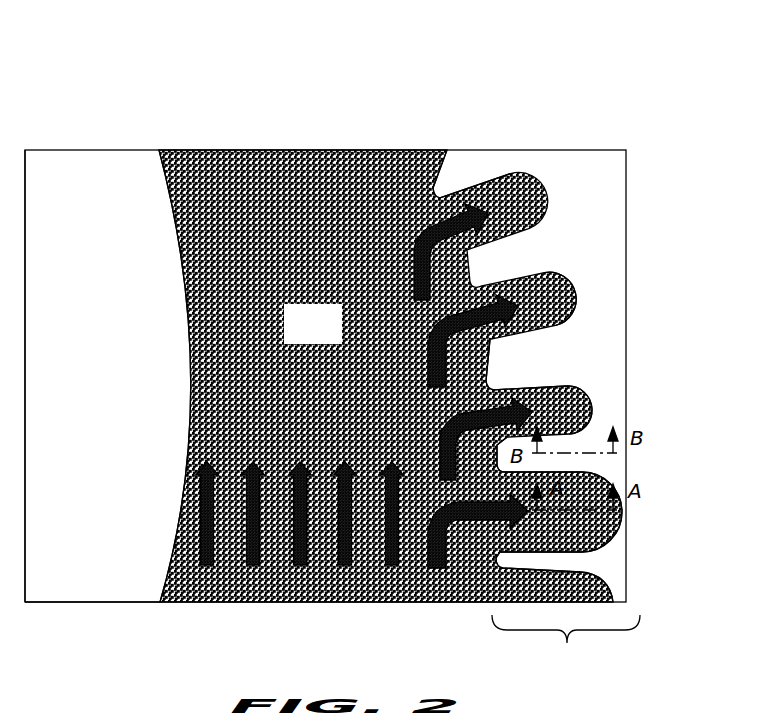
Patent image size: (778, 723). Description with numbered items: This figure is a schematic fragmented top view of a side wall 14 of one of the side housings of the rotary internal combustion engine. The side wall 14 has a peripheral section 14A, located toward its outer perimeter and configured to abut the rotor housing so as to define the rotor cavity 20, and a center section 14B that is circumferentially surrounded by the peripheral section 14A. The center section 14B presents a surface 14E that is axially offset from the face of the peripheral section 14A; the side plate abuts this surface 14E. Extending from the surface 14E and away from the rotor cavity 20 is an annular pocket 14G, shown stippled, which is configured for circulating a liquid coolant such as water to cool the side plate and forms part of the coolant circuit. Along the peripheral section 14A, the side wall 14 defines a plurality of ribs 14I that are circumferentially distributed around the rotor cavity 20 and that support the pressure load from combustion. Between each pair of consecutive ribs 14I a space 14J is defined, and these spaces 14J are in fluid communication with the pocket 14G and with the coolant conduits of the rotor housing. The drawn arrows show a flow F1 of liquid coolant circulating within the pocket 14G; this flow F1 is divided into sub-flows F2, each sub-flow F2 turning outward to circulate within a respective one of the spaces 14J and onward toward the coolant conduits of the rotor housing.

The side wall 14 is at (561, 127).
The peripheral section 14A is at (566, 557).
The center section 14B is at (110, 570).
The surface 14E is at (145, 518).
The pocket 14G is at (330, 338).
The ribs 14I is at (468, 165).
The spaces 14J is at (579, 392).
The rotor cavity 20 is at (72, 396).
The flow F1 is at (256, 540).
The sub-flows F2 is at (445, 570).